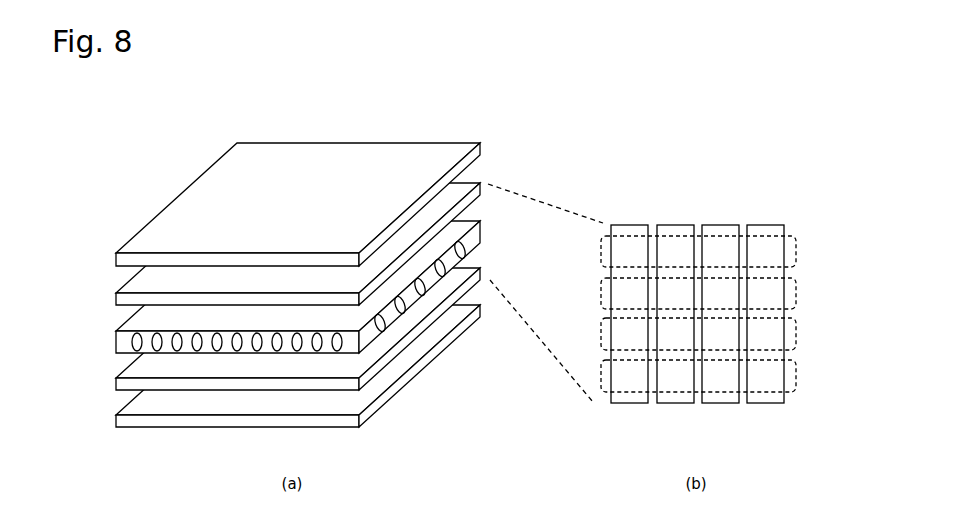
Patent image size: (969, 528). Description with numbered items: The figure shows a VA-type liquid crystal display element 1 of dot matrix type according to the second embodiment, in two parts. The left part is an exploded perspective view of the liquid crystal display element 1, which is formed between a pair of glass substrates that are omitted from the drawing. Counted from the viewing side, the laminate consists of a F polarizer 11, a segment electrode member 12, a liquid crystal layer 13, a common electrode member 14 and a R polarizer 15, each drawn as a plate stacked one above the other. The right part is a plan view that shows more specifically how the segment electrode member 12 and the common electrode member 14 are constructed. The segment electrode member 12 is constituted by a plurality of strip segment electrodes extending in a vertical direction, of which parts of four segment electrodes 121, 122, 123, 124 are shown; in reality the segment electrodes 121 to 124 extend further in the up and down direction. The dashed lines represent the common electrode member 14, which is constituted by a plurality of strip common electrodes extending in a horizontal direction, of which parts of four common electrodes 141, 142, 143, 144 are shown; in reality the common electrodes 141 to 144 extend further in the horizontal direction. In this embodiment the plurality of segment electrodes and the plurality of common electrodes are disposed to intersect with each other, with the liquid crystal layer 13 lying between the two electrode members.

The liquid crystal display element 1 is at (100, 430).
The F polarizer 11 is at (462, 141).
The segment electrode member 12 is at (462, 178).
The liquid crystal layer 13 is at (472, 226).
The common electrode member 14 is at (470, 268).
The R polarizer 15 is at (450, 318).
The segment electrode 121 is at (629, 224).
The segment electrode 122 is at (674, 224).
The segment electrode 123 is at (719, 224).
The segment electrode 124 is at (765, 224).
The common electrode 141 is at (797, 252).
The common electrode 142 is at (797, 293).
The common electrode 143 is at (797, 333).
The common electrode 144 is at (797, 374).